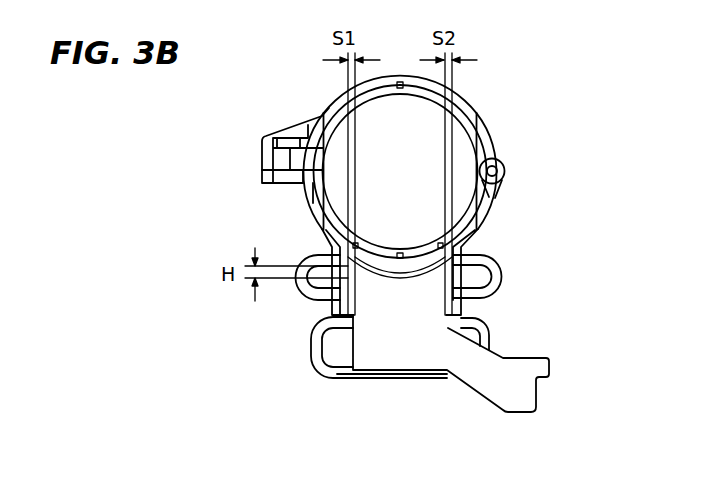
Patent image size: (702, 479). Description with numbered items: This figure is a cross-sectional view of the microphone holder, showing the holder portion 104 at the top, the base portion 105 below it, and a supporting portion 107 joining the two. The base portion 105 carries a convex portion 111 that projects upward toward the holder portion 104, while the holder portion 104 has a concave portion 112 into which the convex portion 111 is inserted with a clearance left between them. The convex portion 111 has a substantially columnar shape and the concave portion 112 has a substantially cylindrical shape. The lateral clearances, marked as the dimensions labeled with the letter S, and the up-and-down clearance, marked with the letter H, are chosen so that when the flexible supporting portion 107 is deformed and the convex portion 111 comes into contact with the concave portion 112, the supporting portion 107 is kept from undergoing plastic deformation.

The holder portion 104 is at (485, 197).
The base portion 105 is at (483, 378).
The supporting portion 107 is at (312, 358).
The convex portion 111 is at (372, 298).
The concave portion 112 is at (458, 277).